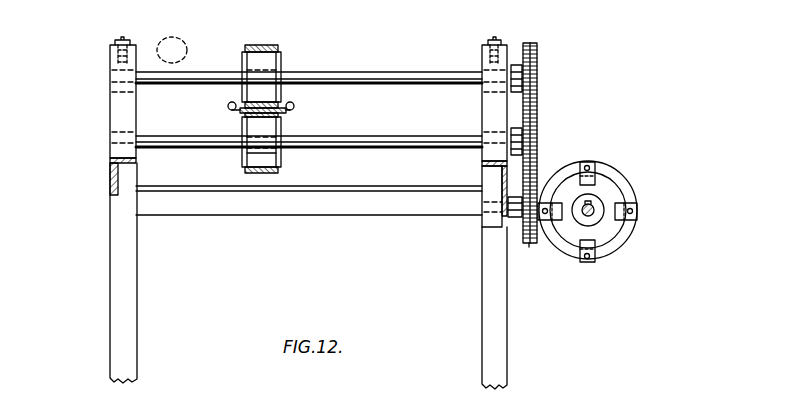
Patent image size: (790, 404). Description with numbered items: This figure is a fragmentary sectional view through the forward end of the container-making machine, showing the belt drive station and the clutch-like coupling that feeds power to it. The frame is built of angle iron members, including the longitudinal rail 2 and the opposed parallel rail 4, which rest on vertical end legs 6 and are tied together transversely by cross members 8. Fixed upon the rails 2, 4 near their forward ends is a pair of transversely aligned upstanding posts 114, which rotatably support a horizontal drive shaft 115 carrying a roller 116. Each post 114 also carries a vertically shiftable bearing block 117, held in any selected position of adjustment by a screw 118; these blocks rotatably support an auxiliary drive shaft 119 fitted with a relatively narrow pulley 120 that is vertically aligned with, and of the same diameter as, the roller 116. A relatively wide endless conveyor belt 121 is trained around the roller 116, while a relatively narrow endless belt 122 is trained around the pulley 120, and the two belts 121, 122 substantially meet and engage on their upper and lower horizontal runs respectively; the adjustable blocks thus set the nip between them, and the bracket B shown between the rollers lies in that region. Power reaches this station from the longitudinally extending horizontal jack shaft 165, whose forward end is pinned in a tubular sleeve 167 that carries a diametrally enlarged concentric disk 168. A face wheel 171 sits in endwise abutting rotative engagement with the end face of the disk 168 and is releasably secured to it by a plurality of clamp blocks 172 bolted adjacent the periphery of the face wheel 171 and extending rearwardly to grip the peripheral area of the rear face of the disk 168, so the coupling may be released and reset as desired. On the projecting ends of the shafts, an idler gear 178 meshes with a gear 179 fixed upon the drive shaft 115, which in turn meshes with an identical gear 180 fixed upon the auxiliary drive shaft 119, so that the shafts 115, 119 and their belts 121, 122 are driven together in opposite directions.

The longitudinal rail 2 is at (482, 164).
The rail 4 is at (110, 162).
The end legs 6 is at (112, 264).
The cross members 8 is at (280, 215).
The upstanding posts 114 is at (110, 48).
The drive shaft 115 is at (205, 140).
The roller 116 is at (254, 153).
The bearing blocks 117 is at (134, 63).
The screws 118 is at (122, 38).
The auxiliary drive shaft 119 is at (352, 88).
The pulley 120 is at (279, 60).
The endless conveyor belt 121 is at (281, 171).
The endless belt 122 is at (268, 45).
The bracket B is at (292, 111).
The jack shaft 165 is at (594, 208).
The tubular sleeve 167 is at (598, 203).
The disk 168 is at (600, 184).
The face wheel 171 is at (604, 172).
The clamp blocks 172 is at (554, 204).
The idler gear 178 is at (526, 246).
The gear 179 is at (538, 126).
The gear 180 is at (538, 68).